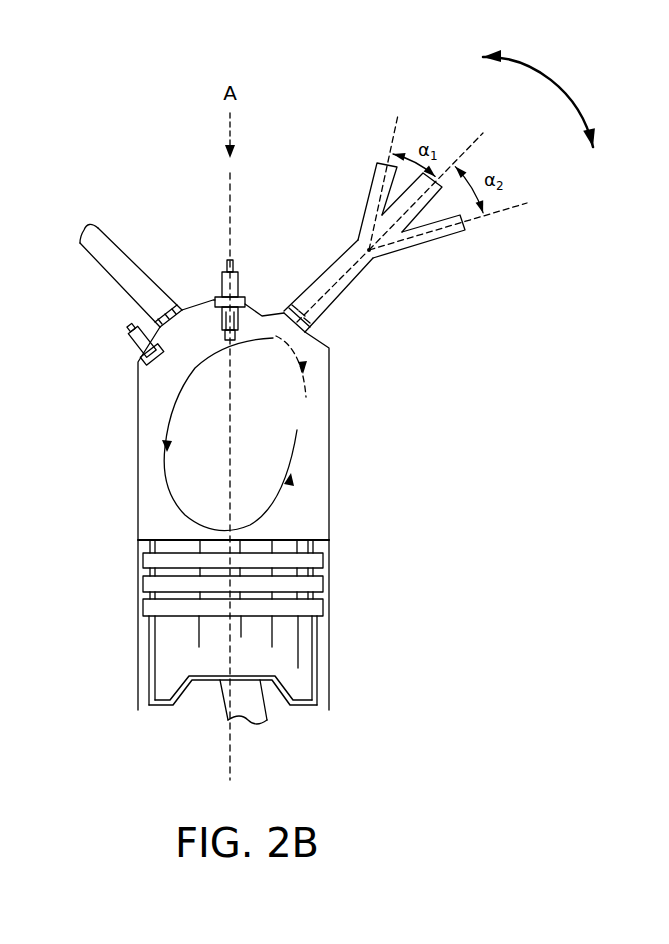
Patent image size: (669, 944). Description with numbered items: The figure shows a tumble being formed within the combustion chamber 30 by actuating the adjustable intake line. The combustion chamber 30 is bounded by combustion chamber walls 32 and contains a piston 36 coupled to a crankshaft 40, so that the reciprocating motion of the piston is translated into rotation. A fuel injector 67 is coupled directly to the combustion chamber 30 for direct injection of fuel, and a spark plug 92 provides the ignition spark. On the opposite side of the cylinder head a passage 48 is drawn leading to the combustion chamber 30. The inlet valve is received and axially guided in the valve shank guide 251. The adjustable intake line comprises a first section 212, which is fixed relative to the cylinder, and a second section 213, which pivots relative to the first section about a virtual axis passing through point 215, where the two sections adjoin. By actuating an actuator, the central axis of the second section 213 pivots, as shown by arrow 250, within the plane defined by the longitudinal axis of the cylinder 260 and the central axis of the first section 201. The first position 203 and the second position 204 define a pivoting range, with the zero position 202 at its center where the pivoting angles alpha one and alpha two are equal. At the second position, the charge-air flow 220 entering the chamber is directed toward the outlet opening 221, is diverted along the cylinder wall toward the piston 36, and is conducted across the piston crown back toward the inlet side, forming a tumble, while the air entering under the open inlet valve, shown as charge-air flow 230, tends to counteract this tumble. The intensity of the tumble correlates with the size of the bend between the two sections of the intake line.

The combustion chamber 30 is at (138, 397).
The combustion chamber walls 32 is at (138, 488).
The piston 36 is at (178, 658).
The crankshaft 40 is at (267, 723).
The intake passage 48 is at (93, 262).
The fuel injector 67 is at (130, 340).
The spark plug 92 is at (220, 290).
The central axis of the first section 201 is at (337, 279).
The zero position 202 is at (475, 148).
The central axis of the second section at the first position 203 is at (396, 126).
The central axis of the second section at the second position 204 is at (493, 218).
The first section 212 is at (340, 287).
The second section 213 is at (427, 247).
The point 215 is at (357, 240).
The charge-air flow 220 is at (172, 423).
The outlet opening 221 is at (180, 320).
The charge-air flow 230 is at (305, 383).
The arrow 250 is at (560, 73).
The valve shank guide 251 is at (294, 302).
The longitudinal axis of the cylinder 260 is at (230, 752).